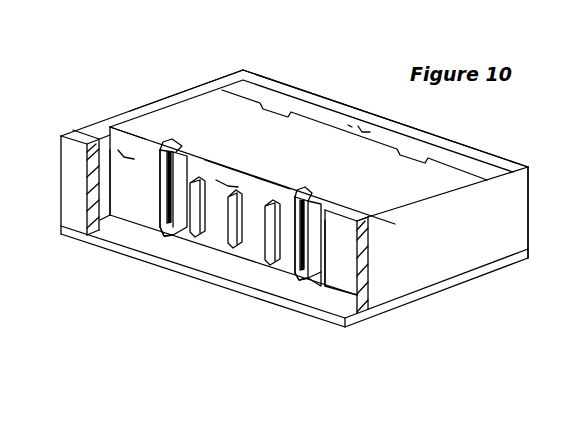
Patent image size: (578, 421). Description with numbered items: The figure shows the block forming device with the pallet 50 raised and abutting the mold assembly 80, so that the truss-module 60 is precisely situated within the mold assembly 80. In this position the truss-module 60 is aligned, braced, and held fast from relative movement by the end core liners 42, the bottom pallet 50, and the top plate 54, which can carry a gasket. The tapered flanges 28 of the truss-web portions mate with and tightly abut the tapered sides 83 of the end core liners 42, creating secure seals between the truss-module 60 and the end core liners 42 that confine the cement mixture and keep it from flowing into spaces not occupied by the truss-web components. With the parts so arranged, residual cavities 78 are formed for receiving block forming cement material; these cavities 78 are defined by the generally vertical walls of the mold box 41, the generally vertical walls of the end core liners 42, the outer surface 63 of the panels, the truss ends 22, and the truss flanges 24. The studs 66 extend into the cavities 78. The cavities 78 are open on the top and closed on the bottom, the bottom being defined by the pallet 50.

The block forming mold assembly 80 is at (462, 140).
The mold box 41 is at (293, 93).
The top plate 54 is at (192, 108).
The residual cavities 78 is at (118, 150).
The end core liners 42 is at (145, 160).
The truss flanges 24 is at (175, 147).
The truss ends 22 is at (176, 229).
The tapered sides 83 is at (155, 212).
The tapered flanges 28 is at (156, 238).
The studs 66 is at (228, 238).
The outer surface 63 is at (252, 198).
The truss-module 60 is at (247, 255).
The pallet 50 is at (267, 283).